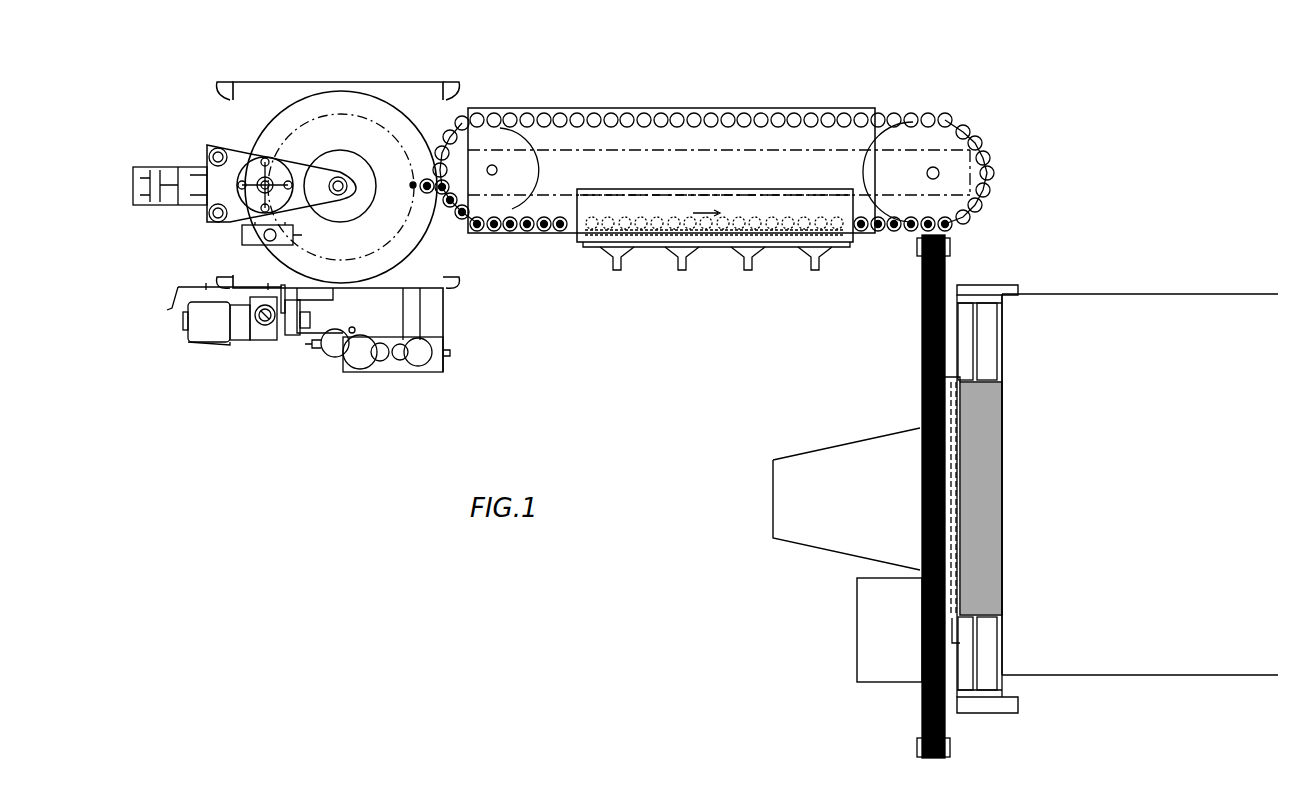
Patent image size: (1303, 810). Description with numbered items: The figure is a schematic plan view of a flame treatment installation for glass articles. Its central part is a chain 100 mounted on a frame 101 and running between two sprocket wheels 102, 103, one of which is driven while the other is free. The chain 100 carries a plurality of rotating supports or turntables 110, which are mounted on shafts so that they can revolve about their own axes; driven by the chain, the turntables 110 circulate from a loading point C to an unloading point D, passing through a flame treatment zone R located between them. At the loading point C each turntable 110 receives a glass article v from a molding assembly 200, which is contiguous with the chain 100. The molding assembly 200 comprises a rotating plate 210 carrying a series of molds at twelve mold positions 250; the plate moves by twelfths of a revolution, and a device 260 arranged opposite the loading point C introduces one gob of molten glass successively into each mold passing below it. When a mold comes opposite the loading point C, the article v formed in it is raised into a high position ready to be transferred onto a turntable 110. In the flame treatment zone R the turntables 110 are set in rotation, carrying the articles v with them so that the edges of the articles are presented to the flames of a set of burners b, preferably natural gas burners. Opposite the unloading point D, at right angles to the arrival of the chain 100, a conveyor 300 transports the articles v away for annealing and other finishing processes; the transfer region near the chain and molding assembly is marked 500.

The chain 100 is at (707, 176).
The frame 101 is at (735, 108).
The sprocket wheel 102 is at (897, 155).
The sprocket wheel 103 is at (527, 130).
The rotating supports or turntables 110 is at (560, 113).
The molding assembly 200 is at (237, 123).
The rotating plate 210 is at (283, 103).
The mold positions 250 is at (302, 123).
The gob introducing device 260 is at (217, 187).
The conveyor 300 is at (923, 350).
The transfer point 500 is at (427, 232).
The loading point C is at (430, 137).
The unloading point D is at (963, 234).
The flame treatment zone R is at (577, 205).
The burners b is at (623, 253).
The glass article v is at (510, 232).